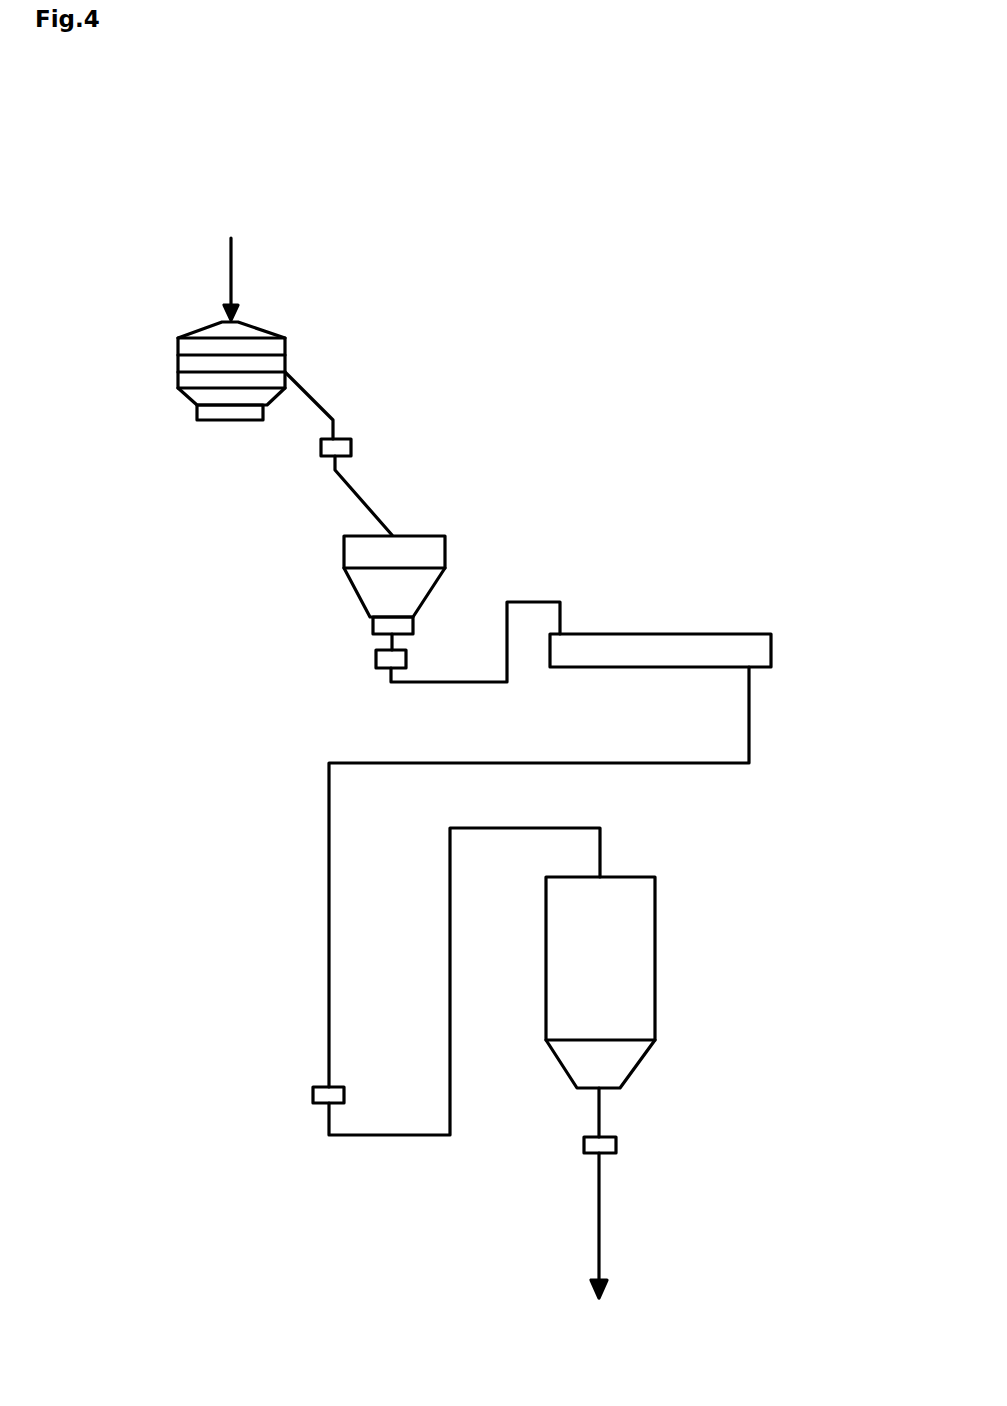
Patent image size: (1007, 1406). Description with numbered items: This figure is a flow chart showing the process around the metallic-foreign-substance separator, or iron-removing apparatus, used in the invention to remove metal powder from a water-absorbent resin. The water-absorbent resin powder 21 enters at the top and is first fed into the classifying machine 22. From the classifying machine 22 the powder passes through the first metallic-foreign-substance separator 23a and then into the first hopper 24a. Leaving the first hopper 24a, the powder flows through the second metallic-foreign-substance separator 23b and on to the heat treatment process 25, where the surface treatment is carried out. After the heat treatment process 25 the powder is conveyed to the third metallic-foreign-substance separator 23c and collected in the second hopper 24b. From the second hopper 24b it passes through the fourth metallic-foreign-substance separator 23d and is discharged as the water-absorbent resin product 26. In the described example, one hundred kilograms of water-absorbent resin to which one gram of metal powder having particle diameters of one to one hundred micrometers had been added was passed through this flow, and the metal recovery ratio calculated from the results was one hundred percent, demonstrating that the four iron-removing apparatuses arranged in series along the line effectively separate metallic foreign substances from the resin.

The water-absorbent resin powder 21 is at (233, 259).
The classifying machine 22 is at (178, 372).
The metallic-foreign-substance separator (iron-removing apparatus 1) 23a is at (321, 453).
The metallic-foreign-substance separator (iron-removing apparatus 2) 23b is at (376, 657).
The metallic-foreign-substance separator (iron-removing apparatus 3) 23c is at (313, 1093).
The metallic-foreign-substance separator (iron-removing apparatus 4) 23d is at (616, 1145).
The hopper 1 24a is at (353, 587).
The hopper 2 24b is at (655, 992).
The heat treatment process 25 is at (771, 652).
The water-absorbent resin product 26 is at (595, 1252).